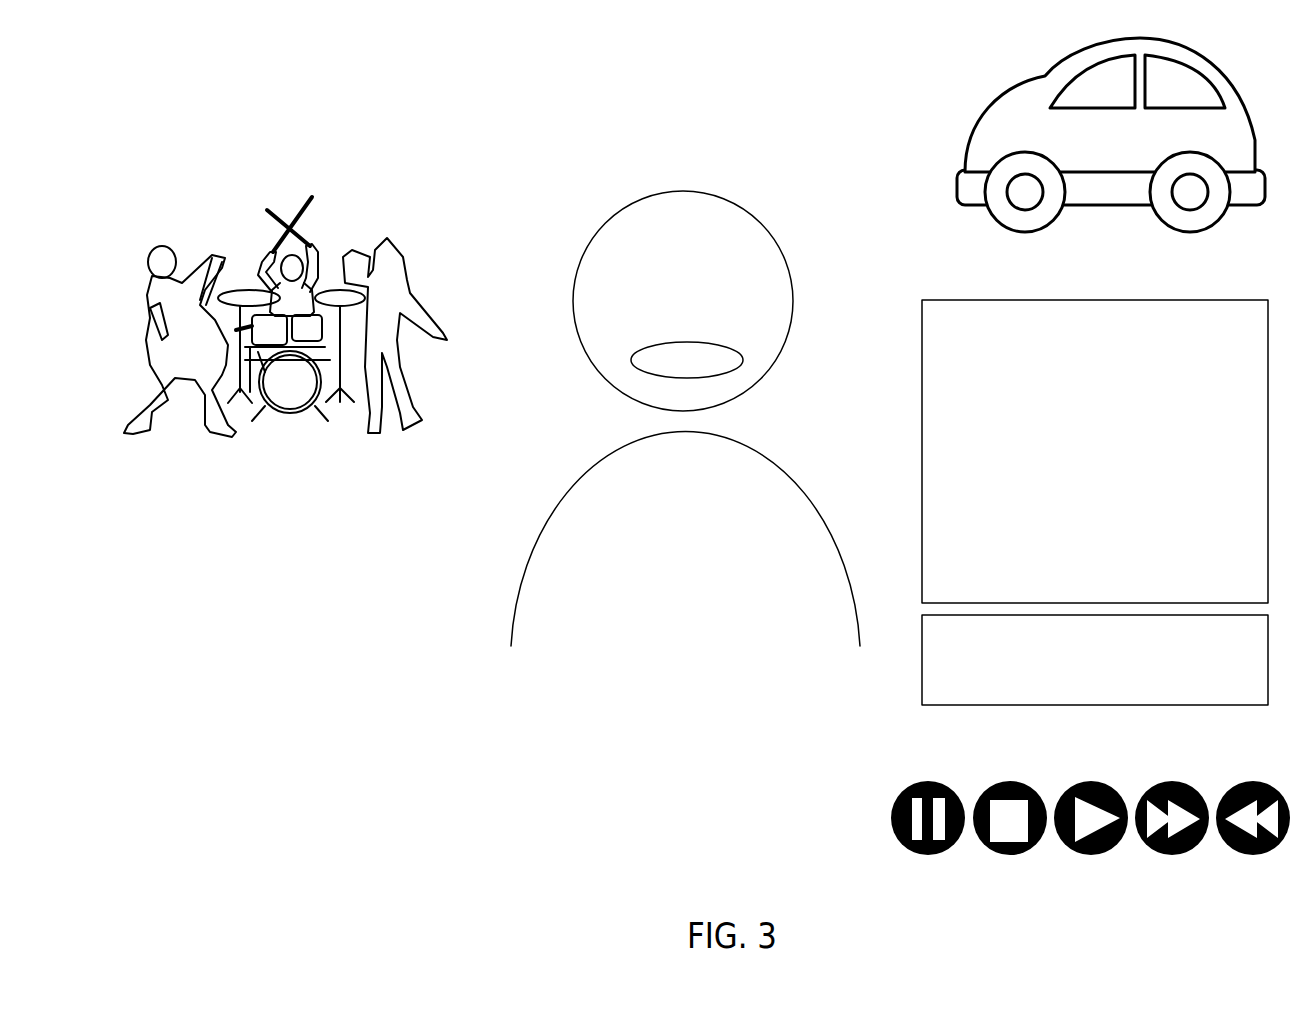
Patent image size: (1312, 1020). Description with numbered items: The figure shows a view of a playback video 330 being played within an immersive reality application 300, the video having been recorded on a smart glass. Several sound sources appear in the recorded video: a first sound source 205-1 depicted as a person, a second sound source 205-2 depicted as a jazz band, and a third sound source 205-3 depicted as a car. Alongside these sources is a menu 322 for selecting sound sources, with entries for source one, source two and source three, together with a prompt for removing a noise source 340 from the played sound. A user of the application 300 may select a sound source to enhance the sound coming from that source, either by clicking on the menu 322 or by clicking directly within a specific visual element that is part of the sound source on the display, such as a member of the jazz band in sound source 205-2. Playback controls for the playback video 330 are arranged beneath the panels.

The immersive reality application 300 is at (380, 98).
The sound source 205-1 is at (713, 614).
The sound source 205-2 is at (206, 219).
The sound source 205-3 is at (1145, 149).
The menu 322 is at (1017, 530).
The playback video 330 is at (892, 800).
The noise source 340 is at (1018, 692).